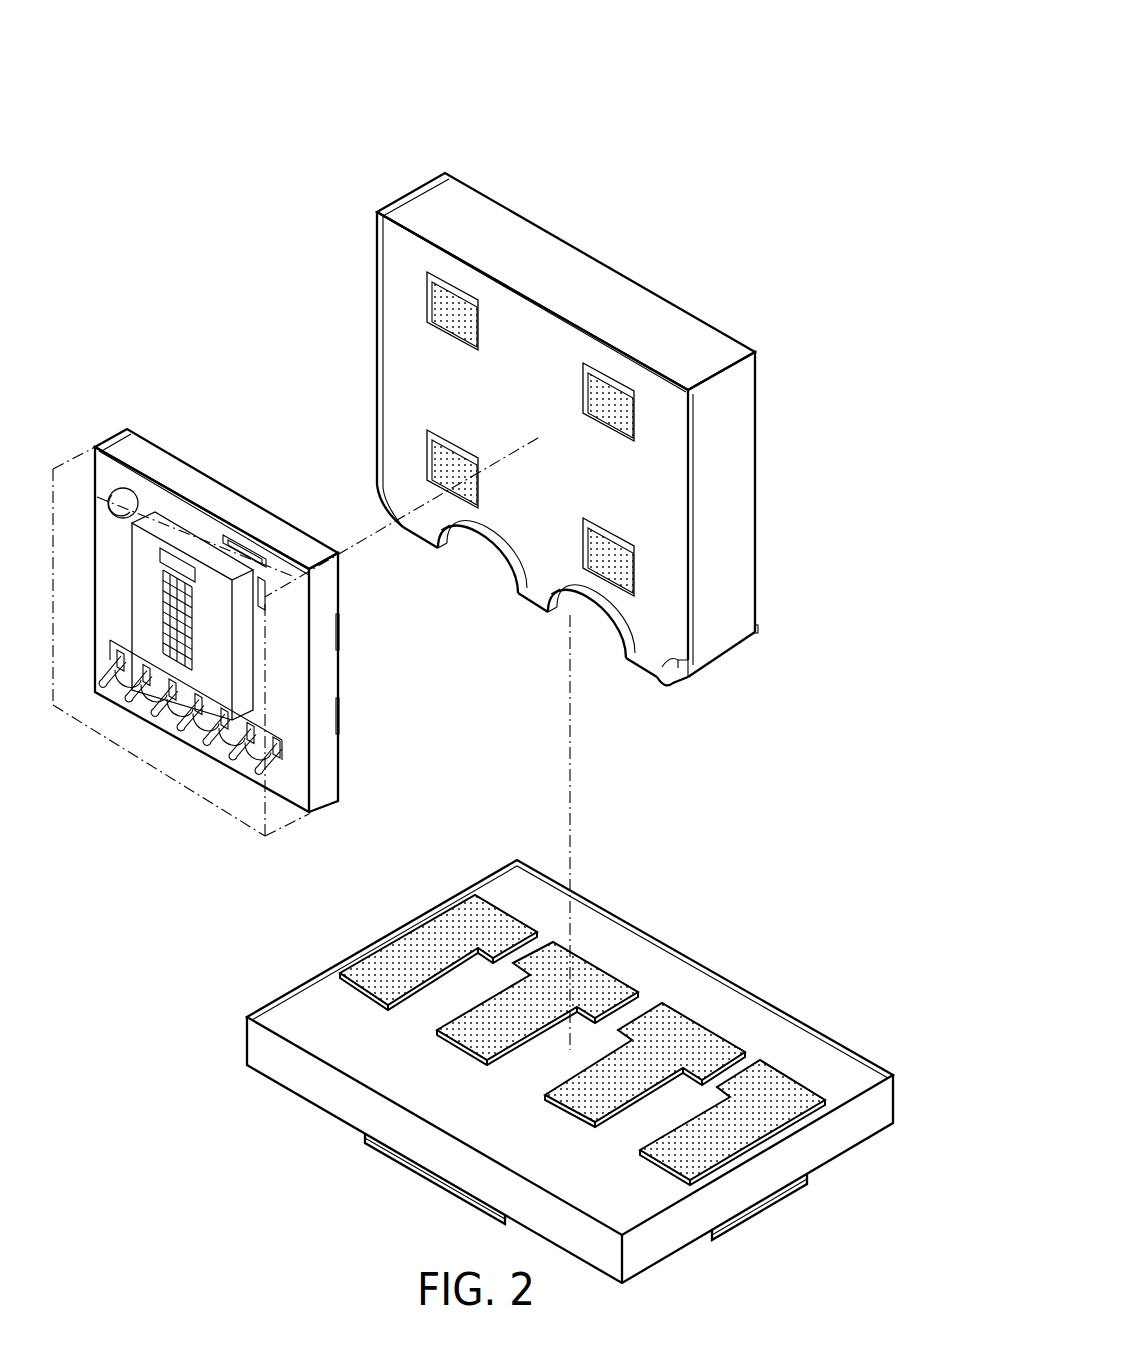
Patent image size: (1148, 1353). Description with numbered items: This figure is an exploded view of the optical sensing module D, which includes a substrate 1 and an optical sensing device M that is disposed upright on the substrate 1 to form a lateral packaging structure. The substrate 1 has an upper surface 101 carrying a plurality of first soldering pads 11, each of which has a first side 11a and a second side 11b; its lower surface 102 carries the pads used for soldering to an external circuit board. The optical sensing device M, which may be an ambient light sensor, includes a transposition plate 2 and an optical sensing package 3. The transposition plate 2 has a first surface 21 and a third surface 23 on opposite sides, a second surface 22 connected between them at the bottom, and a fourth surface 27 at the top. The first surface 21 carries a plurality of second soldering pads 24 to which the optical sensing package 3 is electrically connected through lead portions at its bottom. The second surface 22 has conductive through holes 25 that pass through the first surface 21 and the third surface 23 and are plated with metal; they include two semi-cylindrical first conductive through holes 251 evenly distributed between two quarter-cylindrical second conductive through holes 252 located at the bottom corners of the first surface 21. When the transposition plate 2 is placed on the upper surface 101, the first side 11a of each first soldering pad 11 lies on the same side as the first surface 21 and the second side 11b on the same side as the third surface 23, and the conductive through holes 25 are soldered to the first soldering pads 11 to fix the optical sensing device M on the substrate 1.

The substrate 1 is at (870, 1142).
The upper surface 101 is at (880, 1060).
The lower surface 102 is at (829, 1183).
The first soldering pads 11 is at (515, 930).
The first side 11a is at (352, 1001).
The second side 11b is at (495, 889).
The transposition plate 2 is at (592, 252).
The first surface 21 is at (537, 584).
The second surface 22 is at (735, 665).
The third surface 23 is at (772, 492).
The second soldering pads 24 is at (470, 318).
The conductive through holes 25 is at (902, 110).
The first conductive through hole 251 is at (466, 576).
The second conductive through holes 252 is at (364, 508).
The fourth surface 27 is at (680, 304).
The optical sensing package 3 is at (233, 478).
The optical sensing device M is at (900, 5).
The optical sensing module D is at (185, 175).